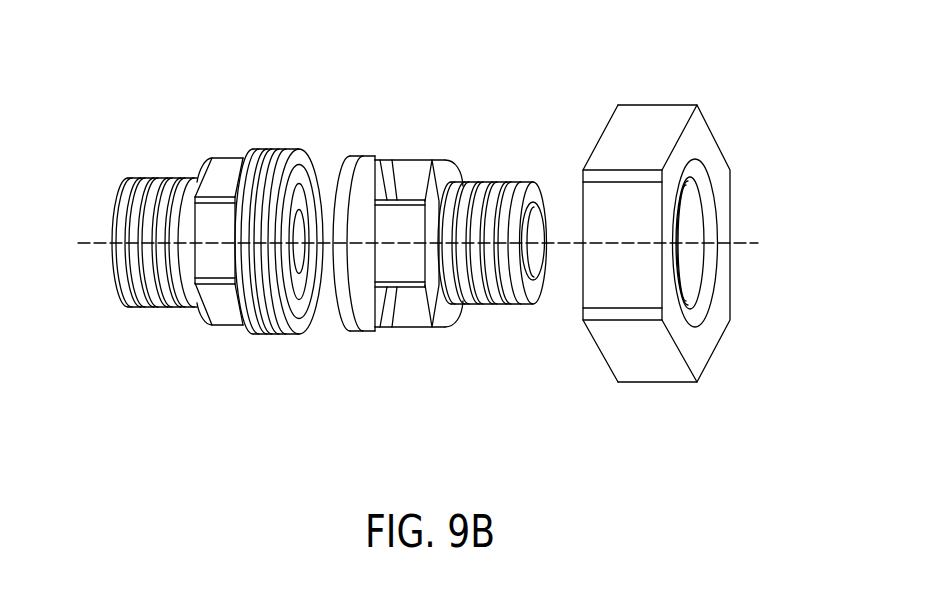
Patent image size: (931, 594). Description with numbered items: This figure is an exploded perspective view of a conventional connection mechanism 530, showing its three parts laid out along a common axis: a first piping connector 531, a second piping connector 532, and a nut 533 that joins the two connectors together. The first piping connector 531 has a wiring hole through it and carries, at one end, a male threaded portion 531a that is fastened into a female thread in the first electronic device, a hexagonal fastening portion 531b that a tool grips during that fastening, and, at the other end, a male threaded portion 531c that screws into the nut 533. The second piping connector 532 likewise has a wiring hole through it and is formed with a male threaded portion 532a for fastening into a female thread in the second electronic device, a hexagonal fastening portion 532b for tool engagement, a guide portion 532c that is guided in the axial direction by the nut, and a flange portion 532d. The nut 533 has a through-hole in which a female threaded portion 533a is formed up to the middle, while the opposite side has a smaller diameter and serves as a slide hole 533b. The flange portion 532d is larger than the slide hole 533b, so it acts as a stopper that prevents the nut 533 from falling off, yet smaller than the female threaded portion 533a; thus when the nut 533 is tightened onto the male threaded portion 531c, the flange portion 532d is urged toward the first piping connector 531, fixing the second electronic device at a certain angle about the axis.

The connection mechanism 530 is at (138, 30).
The first piping connector 531 is at (228, 362).
The male threaded portion 531a is at (155, 180).
The hexagonal fastening portion 531b is at (227, 172).
The male threaded portion 531c is at (277, 157).
The second piping connector 532 is at (413, 362).
The male threaded portion 532a is at (488, 180).
The hexagonal fastening portion 532b is at (422, 168).
The guide portion 532c is at (378, 167).
The flange portion 532d is at (357, 162).
The nut 533 is at (640, 370).
The female threaded portion 533a is at (680, 292).
The slide hole 533b is at (698, 180).